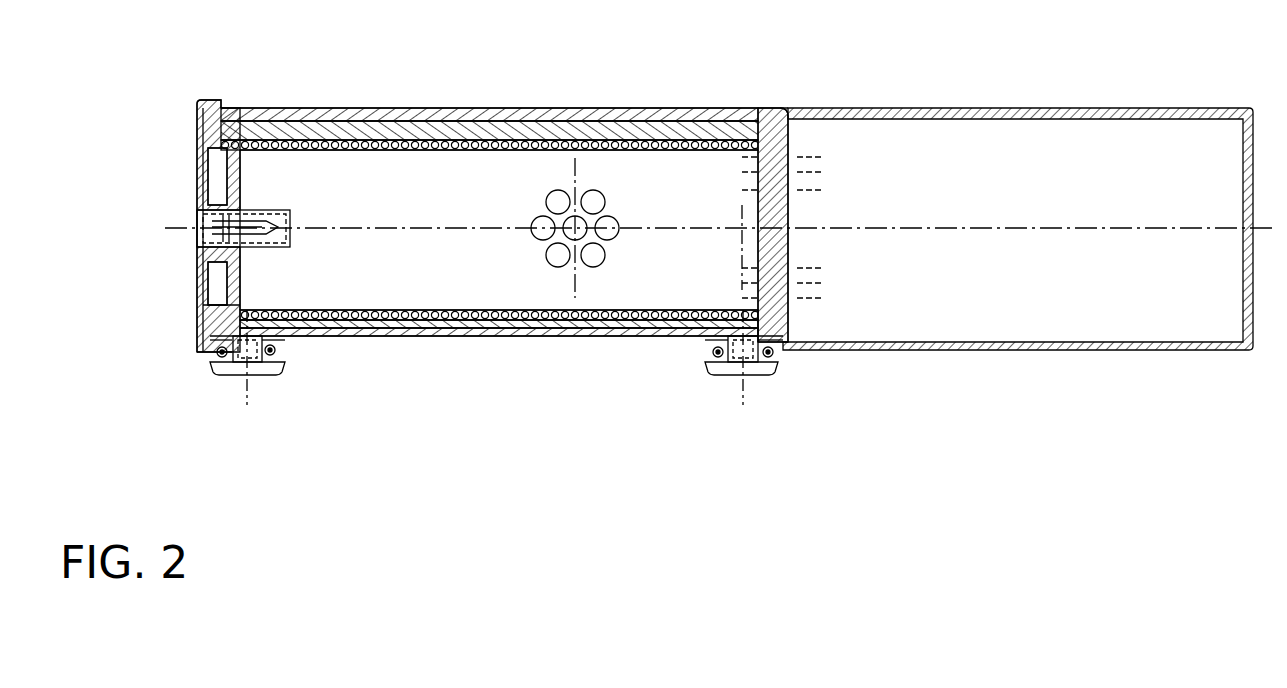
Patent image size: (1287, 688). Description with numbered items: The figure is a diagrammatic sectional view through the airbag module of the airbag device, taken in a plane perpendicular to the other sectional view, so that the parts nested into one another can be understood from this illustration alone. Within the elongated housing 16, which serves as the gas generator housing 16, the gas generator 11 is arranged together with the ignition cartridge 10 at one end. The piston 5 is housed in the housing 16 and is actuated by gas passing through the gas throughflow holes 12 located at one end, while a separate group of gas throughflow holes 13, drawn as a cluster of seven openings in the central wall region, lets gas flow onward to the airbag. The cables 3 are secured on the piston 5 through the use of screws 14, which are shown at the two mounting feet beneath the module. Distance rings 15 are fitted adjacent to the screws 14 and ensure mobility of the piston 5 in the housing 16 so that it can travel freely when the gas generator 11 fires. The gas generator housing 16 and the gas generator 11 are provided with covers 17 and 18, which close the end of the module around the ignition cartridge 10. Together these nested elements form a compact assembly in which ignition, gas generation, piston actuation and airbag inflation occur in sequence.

The cables 3 is at (276, 356).
The piston 5 is at (632, 128).
The ignition cartridge 10 is at (277, 228).
The gas generator 11 is at (467, 182).
The gas throughflow holes 12 is at (768, 158).
The gas throughflow holes 13 is at (558, 258).
The screws 14 is at (232, 368).
The distance rings 15 is at (270, 352).
The gas generator housing 16 is at (962, 344).
The cover 17 is at (212, 316).
The cover 18 is at (202, 275).